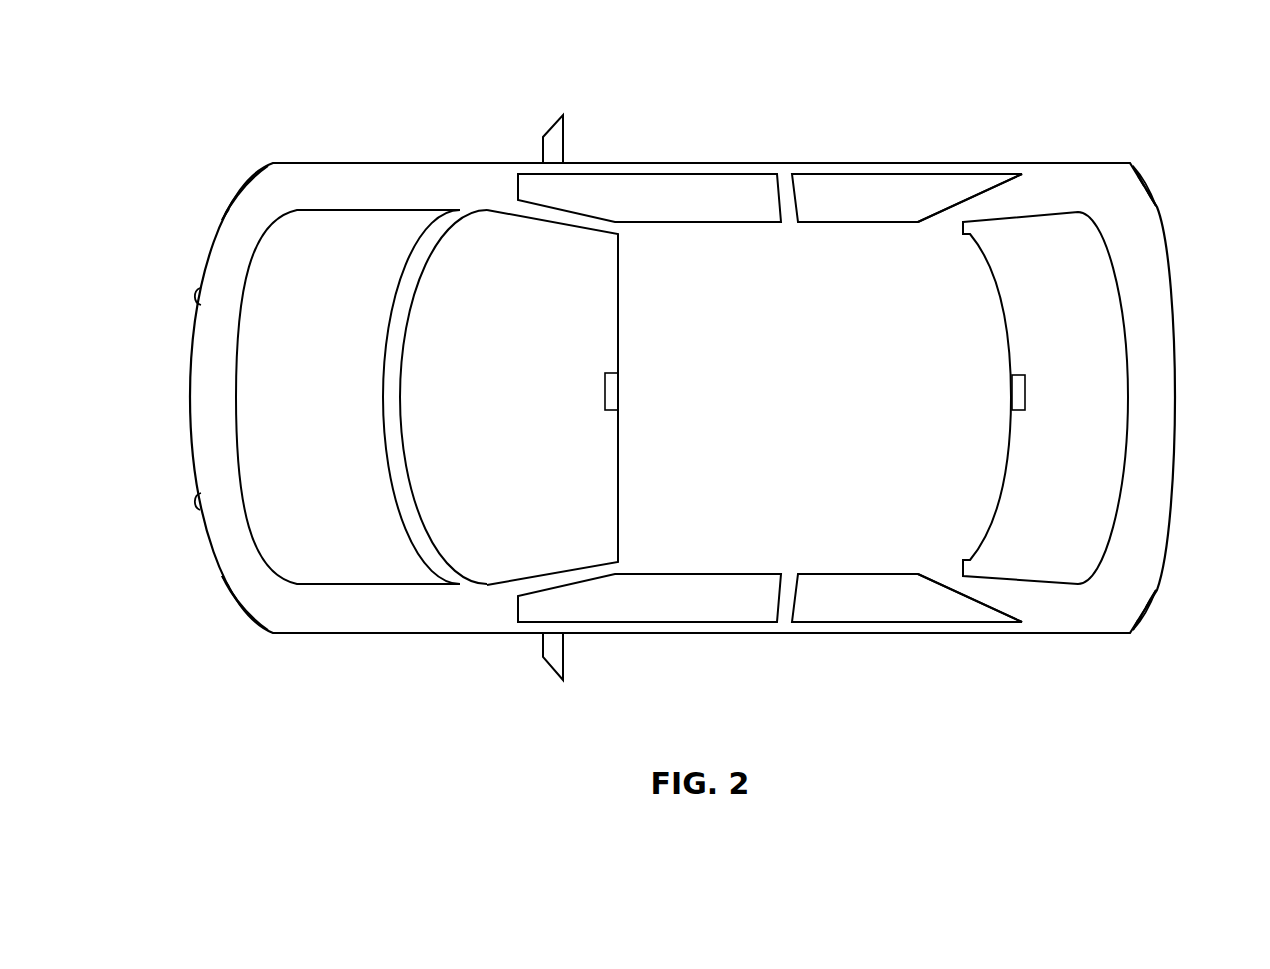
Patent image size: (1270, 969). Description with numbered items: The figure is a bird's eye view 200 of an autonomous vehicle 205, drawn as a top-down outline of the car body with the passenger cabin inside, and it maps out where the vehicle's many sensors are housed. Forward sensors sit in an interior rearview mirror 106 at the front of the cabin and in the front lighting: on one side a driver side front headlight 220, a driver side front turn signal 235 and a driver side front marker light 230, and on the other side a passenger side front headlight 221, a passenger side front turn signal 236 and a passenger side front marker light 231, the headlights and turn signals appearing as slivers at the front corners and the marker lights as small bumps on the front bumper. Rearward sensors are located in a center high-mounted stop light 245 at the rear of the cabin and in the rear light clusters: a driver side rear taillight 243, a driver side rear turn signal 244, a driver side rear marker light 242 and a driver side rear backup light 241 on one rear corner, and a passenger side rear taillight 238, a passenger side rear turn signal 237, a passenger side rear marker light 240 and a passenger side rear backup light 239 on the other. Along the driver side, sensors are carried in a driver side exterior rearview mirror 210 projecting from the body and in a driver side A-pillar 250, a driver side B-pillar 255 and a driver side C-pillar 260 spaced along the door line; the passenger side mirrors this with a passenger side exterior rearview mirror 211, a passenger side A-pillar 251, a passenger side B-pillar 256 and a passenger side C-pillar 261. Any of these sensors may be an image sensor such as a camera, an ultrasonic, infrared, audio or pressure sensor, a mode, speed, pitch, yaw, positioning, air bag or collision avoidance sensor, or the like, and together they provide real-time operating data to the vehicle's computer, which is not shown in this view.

The vehicle 200 is at (836, 44).
The autonomous vehicle 205 is at (749, 363).
The interior rearview mirror 106 is at (610, 390).
The driver side exterior rearview mirror 210 is at (558, 655).
The passenger side exterior rearview mirror 211 is at (555, 142).
The driver side front headlight 220 is at (222, 580).
The passenger side front headlight 221 is at (223, 215).
The driver side front marker light 230 is at (198, 503).
The passenger side front marker light 231 is at (197, 294).
The driver side front turn signal 235 is at (262, 628).
The passenger side front turn signal 236 is at (263, 170).
The passenger side rear turn signal 237 is at (1135, 165).
The passenger side rear taillight 238 is at (1143, 175).
The passenger side rear backup light 239 is at (1148, 188).
The passenger side rear marker light 240 is at (1157, 205).
The driver side rear backup light 241 is at (1160, 592).
The driver side rear marker light 242 is at (1153, 608).
The driver side rear taillight 243 is at (1138, 628).
The driver side rear turn signal 244 is at (1133, 632).
The center high-mounted stop light (CHMSL) 245 is at (1027, 388).
The driver side A-pillar 250 is at (553, 582).
The passenger side A-pillar 251 is at (552, 215).
The driver side B-pillar 255 is at (790, 590).
The passenger side B-pillar 256 is at (787, 200).
The driver side C-pillar 260 is at (977, 590).
The passenger side C-pillar 261 is at (983, 205).